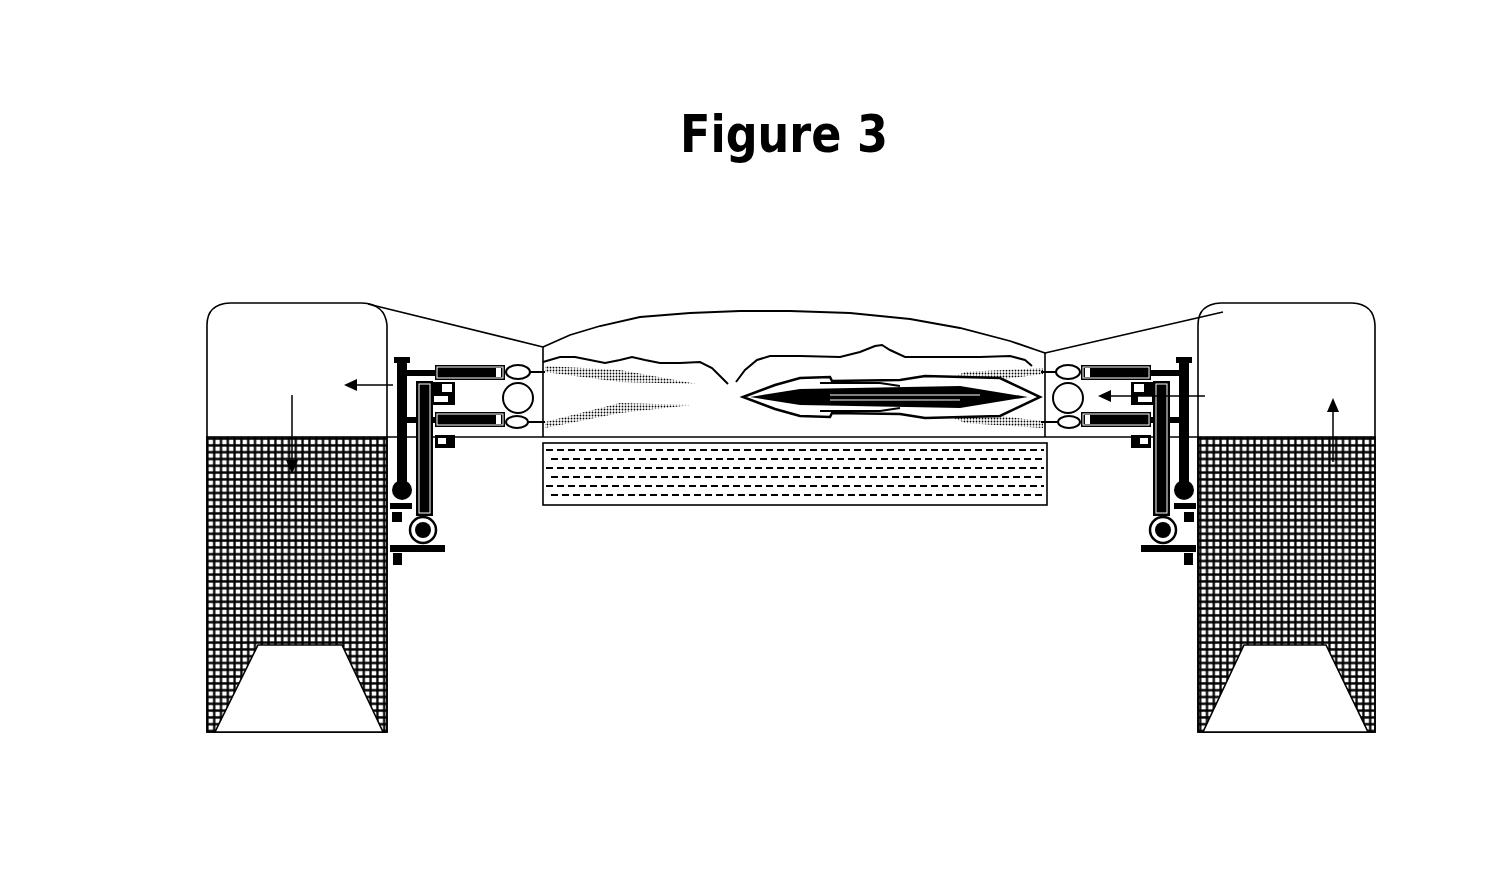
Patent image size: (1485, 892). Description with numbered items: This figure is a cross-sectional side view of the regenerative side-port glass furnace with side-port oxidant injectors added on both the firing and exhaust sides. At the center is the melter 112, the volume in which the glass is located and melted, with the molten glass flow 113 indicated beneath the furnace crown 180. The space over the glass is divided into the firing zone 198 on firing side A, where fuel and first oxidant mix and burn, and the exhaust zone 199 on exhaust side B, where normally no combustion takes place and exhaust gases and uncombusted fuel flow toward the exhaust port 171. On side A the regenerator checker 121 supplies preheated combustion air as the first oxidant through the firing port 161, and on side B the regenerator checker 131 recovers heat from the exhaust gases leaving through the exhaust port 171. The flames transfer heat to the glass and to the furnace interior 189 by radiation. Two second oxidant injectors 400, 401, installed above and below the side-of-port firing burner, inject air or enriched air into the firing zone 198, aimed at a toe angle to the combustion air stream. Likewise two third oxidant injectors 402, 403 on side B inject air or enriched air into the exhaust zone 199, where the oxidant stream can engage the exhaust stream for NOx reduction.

The exhaust port 171 is at (440, 340).
The third oxidant injector 402 is at (487, 363).
The third oxidant injector 403 is at (482, 427).
The furnace interior 189 is at (547, 360).
The exhaust zone 199 is at (630, 357).
The furnace crown 180 is at (780, 313).
The firing zone 198 is at (880, 338).
The second oxidant injector 400 is at (1110, 365).
The second oxidant injector 401 is at (1098, 430).
The firing port 161 is at (1155, 348).
The regenerator checker 131 is at (209, 537).
The regenerator checker 121 is at (1375, 530).
The melter 112 is at (758, 470).
The molten glass flow 113 is at (895, 484).
The firing side A is at (1375, 368).
The exhaust side B is at (207, 375).